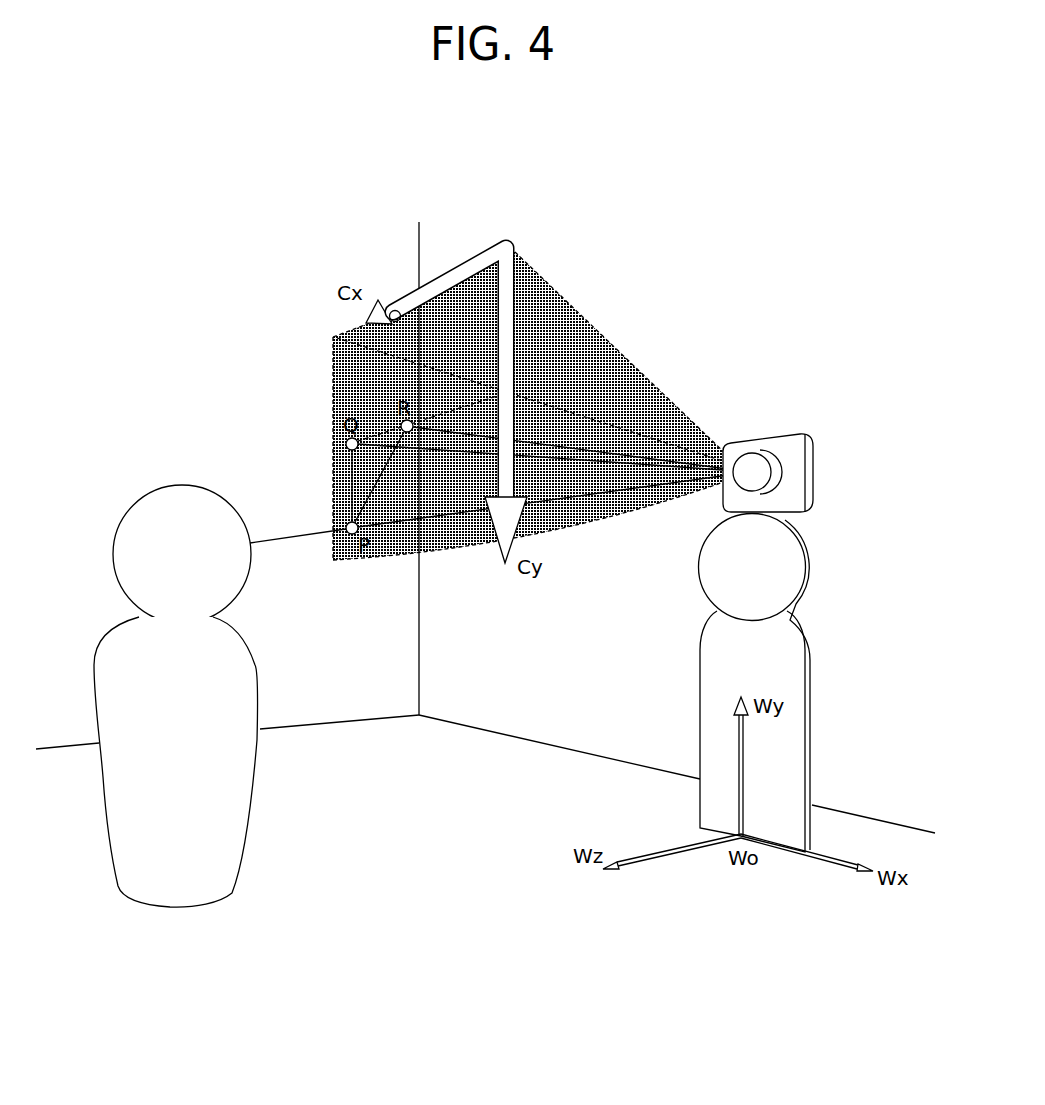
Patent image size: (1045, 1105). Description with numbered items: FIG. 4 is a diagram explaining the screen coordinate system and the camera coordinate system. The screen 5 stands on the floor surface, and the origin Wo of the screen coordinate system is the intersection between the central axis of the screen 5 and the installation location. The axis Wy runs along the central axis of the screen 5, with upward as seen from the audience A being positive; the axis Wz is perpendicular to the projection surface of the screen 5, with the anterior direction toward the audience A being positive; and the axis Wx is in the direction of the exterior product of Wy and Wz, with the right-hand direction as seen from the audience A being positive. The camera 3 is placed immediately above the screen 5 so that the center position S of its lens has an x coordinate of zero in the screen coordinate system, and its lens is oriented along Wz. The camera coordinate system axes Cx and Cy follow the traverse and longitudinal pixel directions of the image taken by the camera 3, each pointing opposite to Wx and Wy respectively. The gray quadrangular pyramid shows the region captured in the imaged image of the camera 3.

The camera 3 is at (797, 434).
The screen 5 is at (810, 565).
The audience A is at (213, 492).